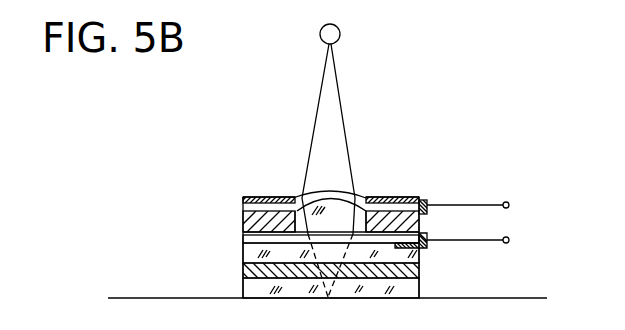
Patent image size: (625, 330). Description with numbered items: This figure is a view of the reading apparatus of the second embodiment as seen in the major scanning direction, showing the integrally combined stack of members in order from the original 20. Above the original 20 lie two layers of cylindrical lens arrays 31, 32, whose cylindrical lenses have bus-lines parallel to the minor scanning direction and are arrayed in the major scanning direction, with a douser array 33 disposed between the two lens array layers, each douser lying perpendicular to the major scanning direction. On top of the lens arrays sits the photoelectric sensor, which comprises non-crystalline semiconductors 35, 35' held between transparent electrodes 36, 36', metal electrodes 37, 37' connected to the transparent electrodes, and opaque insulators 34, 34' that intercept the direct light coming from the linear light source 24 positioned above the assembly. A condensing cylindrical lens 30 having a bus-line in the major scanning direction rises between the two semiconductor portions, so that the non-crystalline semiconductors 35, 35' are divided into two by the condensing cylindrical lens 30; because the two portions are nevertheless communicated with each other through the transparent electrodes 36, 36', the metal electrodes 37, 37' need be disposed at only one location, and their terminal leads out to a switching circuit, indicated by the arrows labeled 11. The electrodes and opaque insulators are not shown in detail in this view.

The linear light source 24 is at (340, 33).
The original 20 is at (523, 298).
The cylindrical lens array 31 is at (422, 289).
The douser array 33 is at (243, 270).
The cylindrical lens array 32 is at (243, 248).
The transparent electrode 36' is at (300, 235).
The non-crystalline semiconductor 35 is at (243, 247).
The non-crystalline semiconductor 35' is at (421, 247).
The transparent electrode 36 is at (300, 194).
The opaque insulator 34 is at (269, 170).
The opaque insulator 34' is at (394, 166).
The condensing cylindrical lens 30 is at (355, 203).
The metal electrode 37 is at (462, 179).
The metal electrode 37' is at (451, 251).
The voltage source connection 11 is at (518, 205).